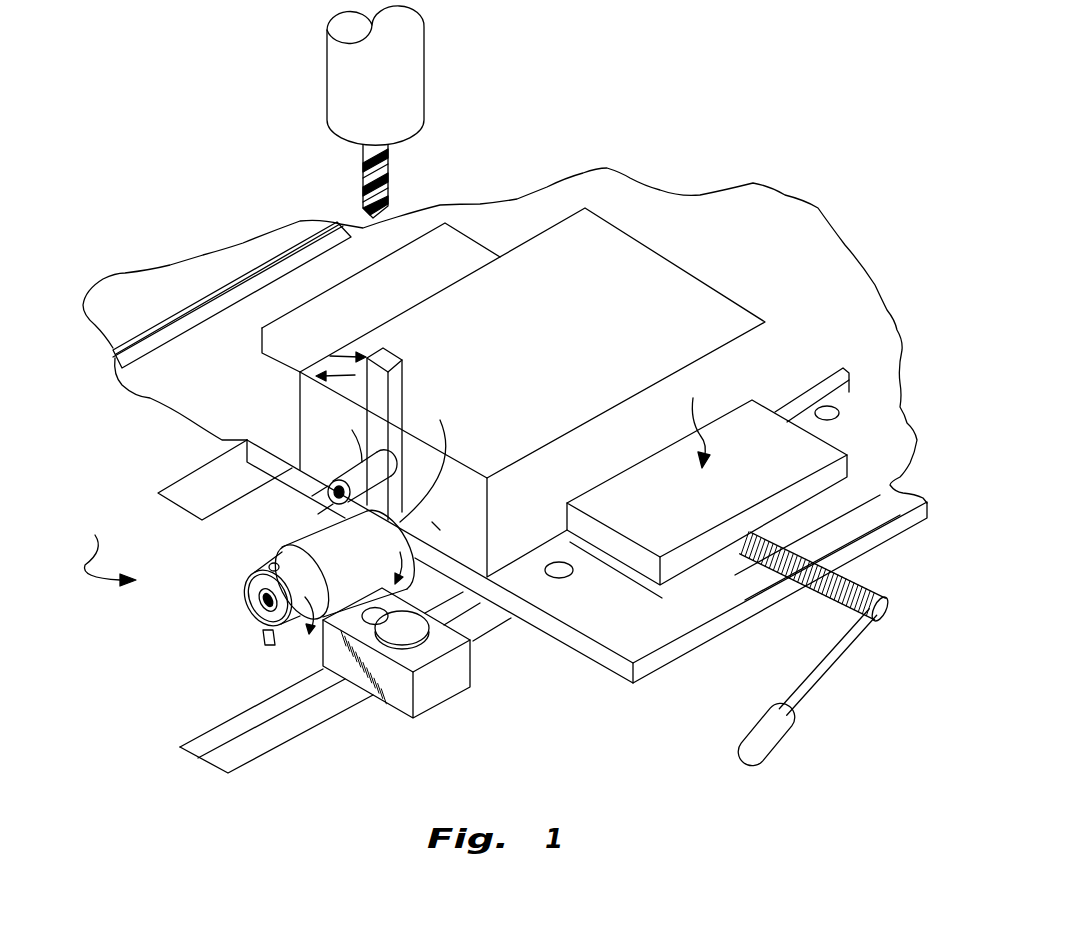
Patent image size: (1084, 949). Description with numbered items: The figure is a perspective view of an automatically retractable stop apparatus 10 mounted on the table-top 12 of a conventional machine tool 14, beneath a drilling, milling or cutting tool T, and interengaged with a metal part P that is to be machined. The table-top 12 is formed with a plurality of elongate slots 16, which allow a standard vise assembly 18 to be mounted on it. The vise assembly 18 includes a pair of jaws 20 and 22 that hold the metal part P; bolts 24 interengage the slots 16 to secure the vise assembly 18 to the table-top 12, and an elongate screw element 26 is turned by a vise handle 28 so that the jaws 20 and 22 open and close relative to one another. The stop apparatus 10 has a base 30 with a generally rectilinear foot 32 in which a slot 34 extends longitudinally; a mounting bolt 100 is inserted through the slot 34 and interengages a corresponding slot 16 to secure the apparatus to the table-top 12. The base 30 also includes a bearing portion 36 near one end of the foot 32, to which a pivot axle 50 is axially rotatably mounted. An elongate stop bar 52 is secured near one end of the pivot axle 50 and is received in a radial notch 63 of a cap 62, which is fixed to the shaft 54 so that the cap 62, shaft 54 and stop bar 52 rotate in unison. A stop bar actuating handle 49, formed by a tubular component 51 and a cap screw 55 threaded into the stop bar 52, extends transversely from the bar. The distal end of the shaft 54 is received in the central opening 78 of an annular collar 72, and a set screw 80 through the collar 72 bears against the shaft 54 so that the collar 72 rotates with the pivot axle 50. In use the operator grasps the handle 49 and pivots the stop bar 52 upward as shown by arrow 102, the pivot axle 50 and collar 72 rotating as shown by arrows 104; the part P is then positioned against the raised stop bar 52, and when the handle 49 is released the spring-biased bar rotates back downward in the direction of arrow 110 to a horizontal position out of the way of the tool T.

The automatically retractable stop apparatus 10 is at (105, 547).
The table-top 12 is at (543, 205).
The machine tool 14 is at (250, 232).
The slots 16 is at (203, 308).
The vise assembly 18 is at (696, 419).
The jaw 20 is at (460, 257).
The jaw 22 is at (755, 432).
The bolts 24 is at (568, 577).
The screw element 26 is at (827, 600).
The vise handle 28 is at (838, 678).
The base 30 is at (447, 683).
The foot 32 is at (372, 692).
The slot 34 is at (357, 622).
The bearing portion 36 is at (323, 550).
The stop bar actuating handle 49 is at (350, 478).
The pivot axle 50 is at (432, 522).
The tubular component 51 is at (352, 430).
The stop bar 52 is at (400, 355).
The shaft 54 is at (260, 600).
The cap screw 55 is at (317, 493).
The cap 62 is at (440, 530).
The radial notch 63 is at (440, 420).
The collar 72 is at (250, 580).
The central opening 78 is at (273, 637).
The set screw 80 is at (271, 565).
The mounting bolt 100 is at (474, 655).
The arrow 102 is at (345, 350).
The arrows 104 is at (418, 566).
The arrow 110 is at (292, 370).
The tool T is at (389, 176).
The metal part P is at (640, 235).